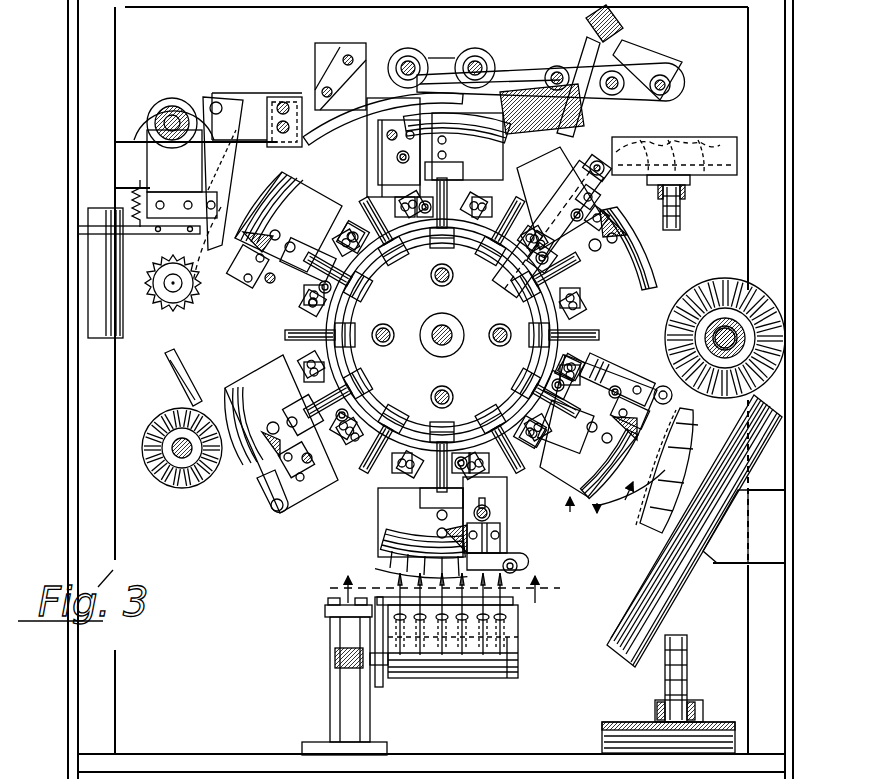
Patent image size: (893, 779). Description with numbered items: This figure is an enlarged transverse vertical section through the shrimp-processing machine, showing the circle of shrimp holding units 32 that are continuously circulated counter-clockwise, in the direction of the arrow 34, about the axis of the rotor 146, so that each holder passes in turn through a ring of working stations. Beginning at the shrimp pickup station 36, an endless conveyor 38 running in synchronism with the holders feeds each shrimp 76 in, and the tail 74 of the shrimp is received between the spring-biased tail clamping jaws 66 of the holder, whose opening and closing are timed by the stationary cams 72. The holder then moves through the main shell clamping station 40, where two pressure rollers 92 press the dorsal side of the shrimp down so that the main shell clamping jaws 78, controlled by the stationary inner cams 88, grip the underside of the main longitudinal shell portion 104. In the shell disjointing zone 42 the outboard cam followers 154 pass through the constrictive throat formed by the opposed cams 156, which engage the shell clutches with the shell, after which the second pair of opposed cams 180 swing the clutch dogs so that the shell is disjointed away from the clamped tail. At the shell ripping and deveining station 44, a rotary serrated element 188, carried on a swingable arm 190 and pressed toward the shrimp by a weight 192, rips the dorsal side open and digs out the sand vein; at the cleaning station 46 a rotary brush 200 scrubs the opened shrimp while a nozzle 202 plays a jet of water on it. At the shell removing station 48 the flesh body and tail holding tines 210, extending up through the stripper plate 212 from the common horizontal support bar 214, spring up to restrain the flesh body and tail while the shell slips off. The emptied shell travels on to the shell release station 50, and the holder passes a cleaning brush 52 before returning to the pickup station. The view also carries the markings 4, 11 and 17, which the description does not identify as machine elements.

The tool head 4 is at (384, 96).
The lever 11 is at (270, 138).
The section line 17 is at (340, 596).
The shrimp holding unit 32 is at (758, 292).
The arrow 34 is at (367, 350).
The shrimp pickup station 36 is at (584, 146).
The endless conveyor 38 is at (690, 134).
The main shell clamping station 40 is at (494, 104).
The shell disjointing station 42 is at (358, 92).
The shell ripping and deveining station 44 is at (212, 300).
The cleaning station 46 is at (218, 490).
The shell removing station 48 is at (376, 565).
The shell release station 50 is at (662, 532).
The cleaning brush 52 is at (760, 290).
The shrimp tail clamping jaws 66 is at (533, 546).
The stationary cams 72 is at (520, 268).
The shrimp tail 74 is at (560, 160).
The shrimp 76 is at (608, 140).
The main shell clamping jaws 78 is at (630, 297).
The stationary inner cams 88 is at (522, 256).
The pressure rollers 92 is at (420, 52).
The main longitudinal portion of the shrimp shell 104 is at (688, 448).
The axis of the rotor 146 is at (450, 343).
The outboard cam followers 154 is at (650, 362).
The opposed cams 156 is at (332, 146).
The second pair of opposed cams 180 is at (330, 112).
The rotary serrated element 188 is at (152, 305).
The swingable arm 190 is at (190, 180).
The weight 192 is at (97, 337).
The rotary brush 200 is at (172, 486).
The nozzle 202 is at (176, 380).
The flesh body and tail holding tines 210 is at (512, 602).
The stripper plate 212 is at (520, 638).
The common horizontal support bar 214 is at (520, 680).